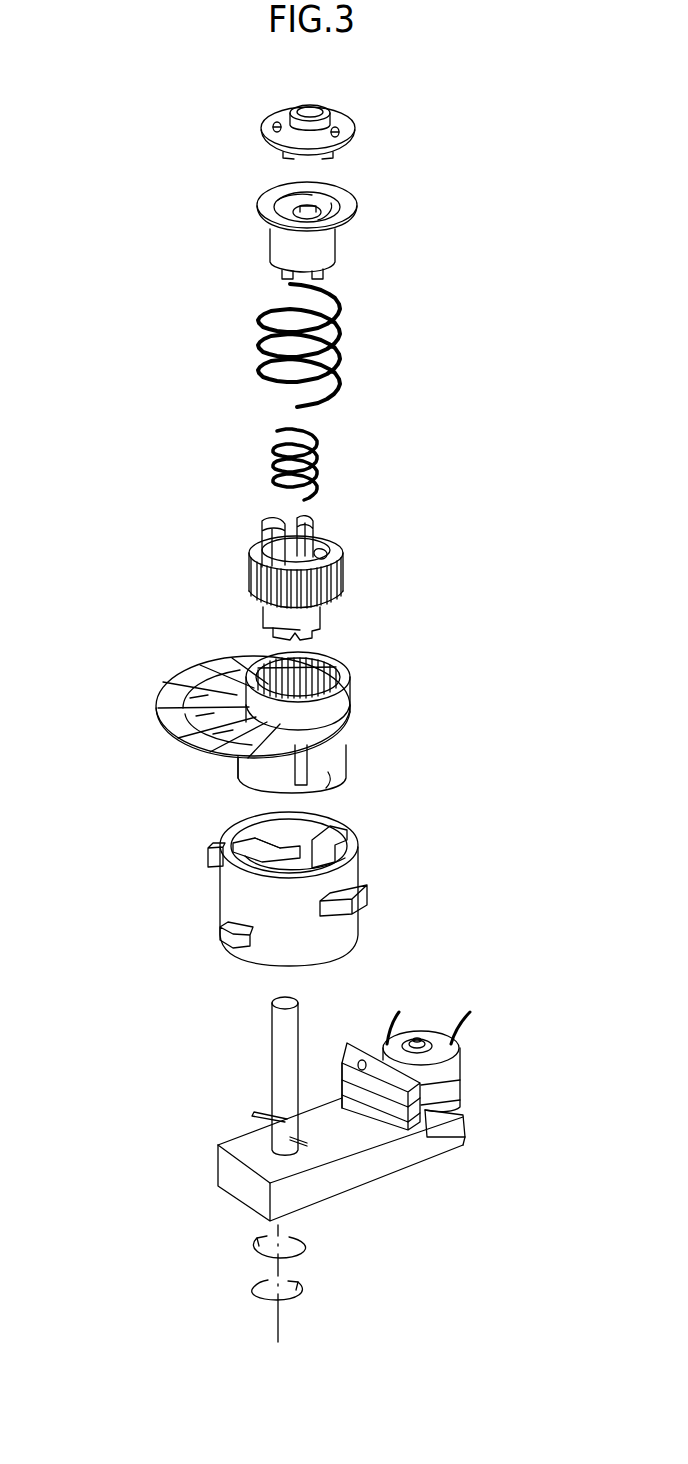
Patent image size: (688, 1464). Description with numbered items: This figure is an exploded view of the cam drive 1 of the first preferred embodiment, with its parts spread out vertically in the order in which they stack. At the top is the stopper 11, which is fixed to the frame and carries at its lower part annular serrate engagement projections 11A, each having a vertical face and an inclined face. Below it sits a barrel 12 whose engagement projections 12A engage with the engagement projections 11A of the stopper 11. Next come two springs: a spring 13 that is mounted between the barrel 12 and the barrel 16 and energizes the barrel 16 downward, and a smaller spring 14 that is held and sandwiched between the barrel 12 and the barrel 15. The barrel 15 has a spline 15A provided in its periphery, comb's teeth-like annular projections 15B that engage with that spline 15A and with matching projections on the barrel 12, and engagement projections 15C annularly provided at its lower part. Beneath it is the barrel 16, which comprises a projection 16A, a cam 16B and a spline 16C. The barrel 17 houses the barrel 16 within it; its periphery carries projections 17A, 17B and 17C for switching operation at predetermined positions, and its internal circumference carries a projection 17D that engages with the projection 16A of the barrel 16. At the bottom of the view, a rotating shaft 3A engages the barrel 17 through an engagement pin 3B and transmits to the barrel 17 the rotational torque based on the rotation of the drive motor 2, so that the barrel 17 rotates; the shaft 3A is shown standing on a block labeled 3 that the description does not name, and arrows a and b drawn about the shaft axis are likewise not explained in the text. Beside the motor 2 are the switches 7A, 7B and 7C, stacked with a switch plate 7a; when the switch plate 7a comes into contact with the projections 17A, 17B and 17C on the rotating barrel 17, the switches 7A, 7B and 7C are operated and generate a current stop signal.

The cam drive 1 is at (160, 290).
The drive motor 2 is at (442, 1046).
The base 3 is at (252, 1190).
The rotating shaft 3A is at (285, 1058).
The engagement pin 3B is at (255, 1117).
The switch 7A is at (422, 1090).
The switch 7B is at (422, 1108).
The switch 7C is at (418, 1128).
The switch plate 7a is at (342, 1060).
The stopper 11 is at (348, 130).
The engagement projections 11A is at (289, 156).
The barrel 12 is at (340, 241).
The engagement projections 12A is at (292, 198).
The spring 13 is at (341, 340).
The spring 14 is at (318, 462).
The barrel 15 is at (340, 553).
The spline 15A is at (256, 574).
The comb's teeth-like annular projections 15B is at (266, 528).
The engagement projections 15C is at (268, 630).
The barrel 16 is at (344, 767).
The projection 16A is at (240, 774).
The cam 16B is at (163, 730).
The spline 16C is at (268, 662).
The barrel 17 is at (350, 876).
The projection 17A is at (208, 859).
The projection 17B is at (368, 902).
The projection 17C is at (220, 934).
The projection 17D is at (252, 843).
The rotation direction a is at (273, 1278).
The rotation direction b is at (285, 1283).